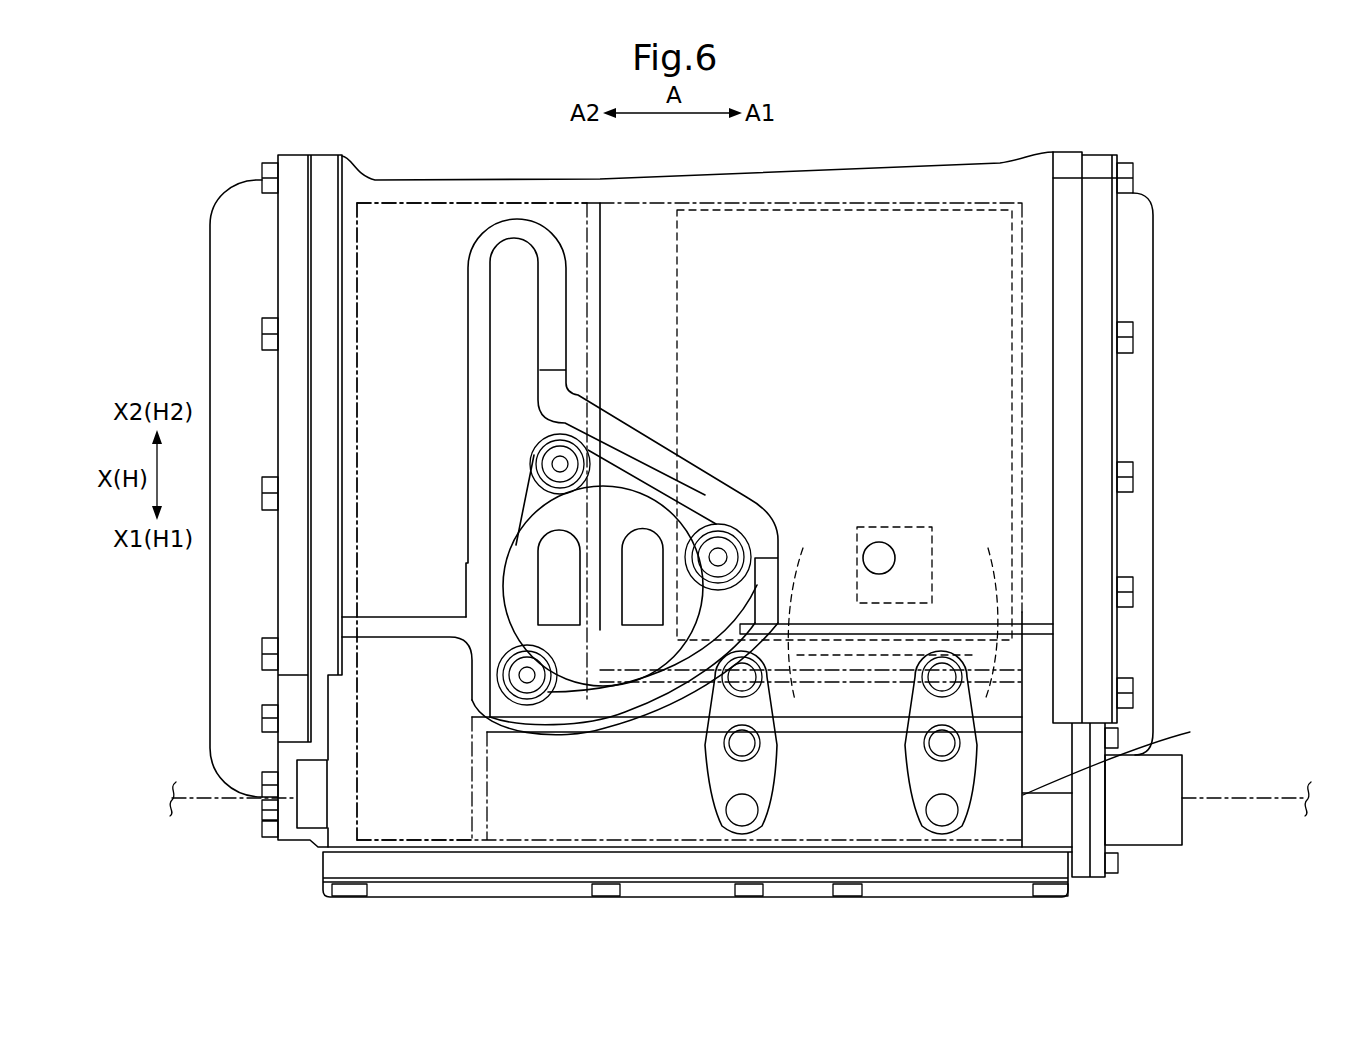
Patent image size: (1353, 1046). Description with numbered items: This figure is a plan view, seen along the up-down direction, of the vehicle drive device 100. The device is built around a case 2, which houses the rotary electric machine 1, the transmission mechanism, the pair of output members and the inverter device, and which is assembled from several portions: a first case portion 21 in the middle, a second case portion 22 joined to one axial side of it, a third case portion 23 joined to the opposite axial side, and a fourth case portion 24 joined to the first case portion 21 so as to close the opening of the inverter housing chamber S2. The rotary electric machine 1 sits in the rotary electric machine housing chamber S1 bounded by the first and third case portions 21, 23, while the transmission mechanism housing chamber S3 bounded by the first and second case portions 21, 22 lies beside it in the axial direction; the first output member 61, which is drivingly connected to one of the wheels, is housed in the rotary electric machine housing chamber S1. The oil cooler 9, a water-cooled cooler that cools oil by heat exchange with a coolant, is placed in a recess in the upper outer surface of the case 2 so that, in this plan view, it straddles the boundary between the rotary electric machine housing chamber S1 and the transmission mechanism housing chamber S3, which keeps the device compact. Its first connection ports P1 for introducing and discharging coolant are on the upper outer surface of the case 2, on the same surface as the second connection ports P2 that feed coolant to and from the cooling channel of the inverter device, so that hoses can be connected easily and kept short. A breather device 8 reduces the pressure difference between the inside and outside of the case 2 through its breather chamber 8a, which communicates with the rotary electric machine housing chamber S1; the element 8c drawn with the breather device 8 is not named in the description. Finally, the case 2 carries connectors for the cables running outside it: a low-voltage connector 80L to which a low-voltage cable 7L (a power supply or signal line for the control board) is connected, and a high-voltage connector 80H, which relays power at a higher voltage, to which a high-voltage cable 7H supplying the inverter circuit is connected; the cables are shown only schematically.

The vehicle drive device 100 is at (1002, 134).
The rotary electric machine 1 is at (940, 210).
The case 2 is at (815, 171).
The first case portion 21 is at (517, 180).
The second case portion 22 is at (208, 278).
The third case portion 23 is at (1153, 278).
The fourth case portion 24 is at (680, 900).
The oil cooler 9 is at (615, 498).
The breather device 8 is at (886, 503).
The breather chamber 8a is at (907, 527).
The connector hole 8c is at (866, 545).
The first output member 61 is at (842, 657).
The first connection port P1 is at (655, 552).
The second connection port P2 is at (940, 743).
The rotary electric machine housing chamber S1 is at (845, 202).
The inverter housing chamber S2 is at (1118, 750).
The transmission mechanism housing chamber S3 is at (410, 203).
The low-voltage cable 7L is at (228, 800).
The high-voltage cable 7H is at (1245, 800).
The low-voltage connector 80L is at (308, 822).
The high-voltage connector 80H is at (1152, 832).